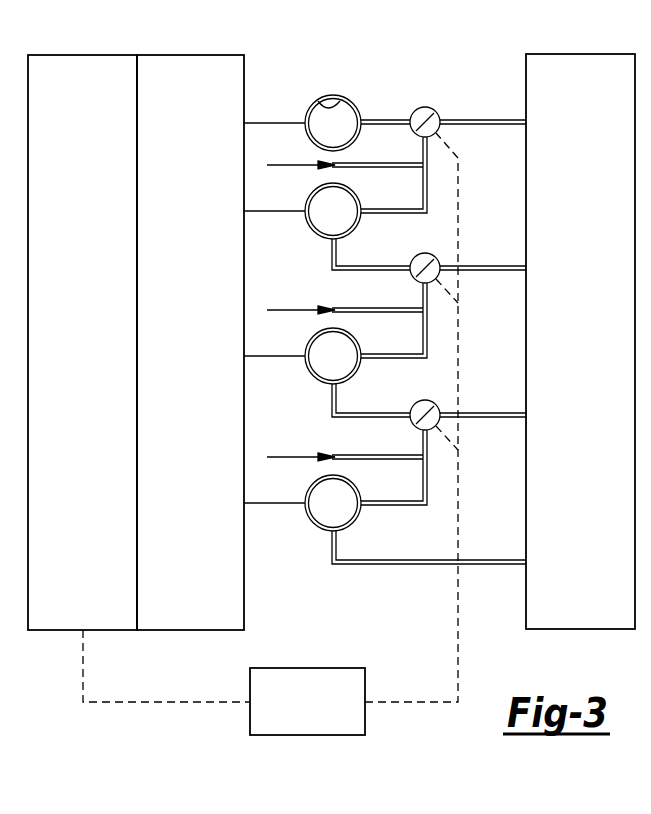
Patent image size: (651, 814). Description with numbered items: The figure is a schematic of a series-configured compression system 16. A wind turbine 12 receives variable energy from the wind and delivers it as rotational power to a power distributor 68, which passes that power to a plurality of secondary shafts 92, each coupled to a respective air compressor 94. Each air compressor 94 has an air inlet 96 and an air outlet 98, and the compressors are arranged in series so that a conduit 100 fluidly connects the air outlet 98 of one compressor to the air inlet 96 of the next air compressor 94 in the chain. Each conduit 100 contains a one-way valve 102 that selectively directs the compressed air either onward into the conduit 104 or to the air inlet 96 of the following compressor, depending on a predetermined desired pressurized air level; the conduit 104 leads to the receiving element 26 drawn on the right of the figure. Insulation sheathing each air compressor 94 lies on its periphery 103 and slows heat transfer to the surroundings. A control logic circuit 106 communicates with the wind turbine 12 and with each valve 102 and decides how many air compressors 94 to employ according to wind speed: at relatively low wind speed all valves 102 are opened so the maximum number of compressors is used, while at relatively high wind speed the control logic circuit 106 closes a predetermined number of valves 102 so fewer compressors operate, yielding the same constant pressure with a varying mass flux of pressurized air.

The wind turbine 12 is at (96, 356).
The power distributor 68 is at (203, 356).
The fuel tank 26 is at (594, 356).
The air inlet 96 is at (268, 162).
The periphery 103 is at (324, 106).
The air compressor 94 is at (358, 97).
The air outlet 98 is at (387, 117).
The one-way valve 102 is at (427, 107).
The conduit 100 is at (428, 183).
The secondary shaft 92 is at (266, 215).
The conduit 104 is at (493, 272).
The control logic circuit 106 is at (320, 714).
The compression system 16 is at (134, 735).